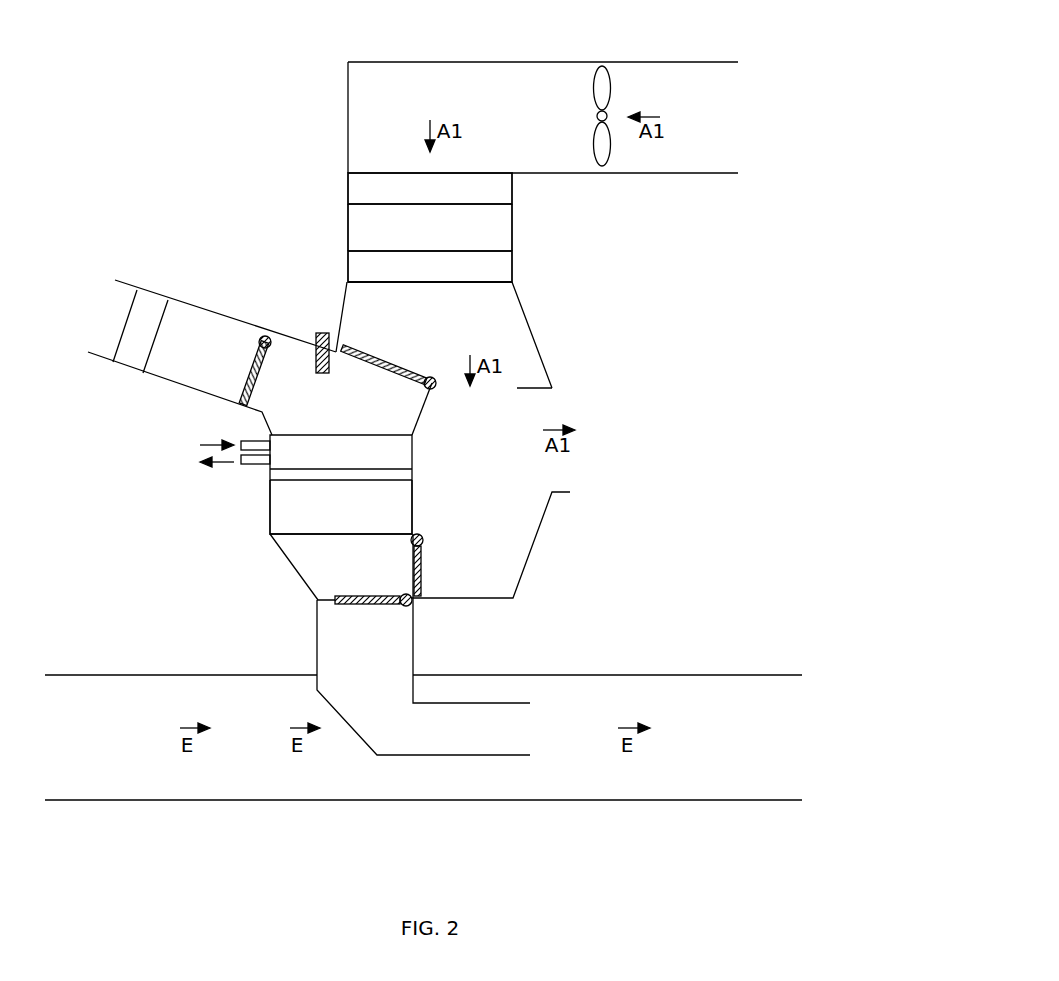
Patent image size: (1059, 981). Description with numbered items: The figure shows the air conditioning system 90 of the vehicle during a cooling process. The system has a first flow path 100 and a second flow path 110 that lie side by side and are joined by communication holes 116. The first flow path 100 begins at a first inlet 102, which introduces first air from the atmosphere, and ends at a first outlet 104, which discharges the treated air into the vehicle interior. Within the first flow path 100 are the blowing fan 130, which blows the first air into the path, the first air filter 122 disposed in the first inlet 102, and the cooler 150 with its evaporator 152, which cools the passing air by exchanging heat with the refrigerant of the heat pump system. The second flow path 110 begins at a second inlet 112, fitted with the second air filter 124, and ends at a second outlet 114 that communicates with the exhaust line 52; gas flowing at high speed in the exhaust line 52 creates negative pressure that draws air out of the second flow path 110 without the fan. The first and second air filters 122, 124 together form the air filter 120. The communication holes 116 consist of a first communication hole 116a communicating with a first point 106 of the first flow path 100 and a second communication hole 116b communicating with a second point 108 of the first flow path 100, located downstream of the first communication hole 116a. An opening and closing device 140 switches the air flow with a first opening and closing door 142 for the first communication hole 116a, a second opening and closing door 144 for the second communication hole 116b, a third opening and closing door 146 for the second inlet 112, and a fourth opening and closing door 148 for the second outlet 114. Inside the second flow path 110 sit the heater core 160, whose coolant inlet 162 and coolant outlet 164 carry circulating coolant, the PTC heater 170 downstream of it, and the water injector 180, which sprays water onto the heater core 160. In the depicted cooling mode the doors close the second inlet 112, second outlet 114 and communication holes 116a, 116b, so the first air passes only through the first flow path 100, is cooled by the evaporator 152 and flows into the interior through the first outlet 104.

The exhaust line 52 is at (427, 800).
The air conditioning system 90 is at (318, 205).
The first flow path 100 is at (414, 323).
The first inlet 102 is at (541, 62).
The first outlet 104 is at (566, 388).
The first point 106 is at (336, 345).
The second point 108 is at (420, 602).
The second flow path 110 is at (314, 424).
The second inlet 112 is at (180, 387).
The second outlet 114 is at (317, 632).
The communication holes 116 is at (395, 557).
The first communication hole 116a is at (417, 410).
The second communication hole 116b is at (360, 586).
The air filter 120 is at (530, 188).
The first air filter 122 is at (500, 193).
The second air filter 124 is at (155, 305).
The blowing fan 130 is at (602, 66).
The opening and closing device 140 is at (60, 552).
The first opening and closing door 142 is at (366, 354).
The second opening and closing door 144 is at (424, 571).
The third opening and closing door 146 is at (255, 347).
The fourth opening and closing door 148 is at (350, 589).
The cooler 150 is at (530, 269).
The evaporator 152 is at (500, 279).
The heater core 160 is at (298, 482).
The coolant inlet 162 is at (270, 433).
The coolant outlet 164 is at (297, 455).
The PTC heater 170 is at (280, 513).
The water injector 180 is at (315, 348).